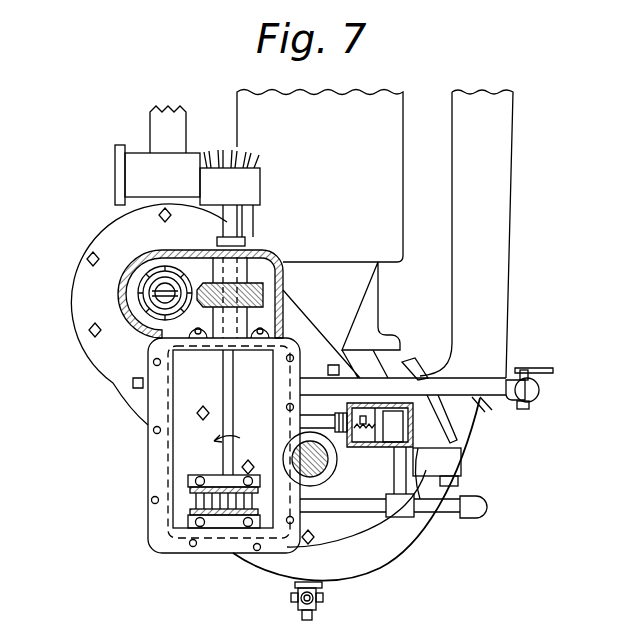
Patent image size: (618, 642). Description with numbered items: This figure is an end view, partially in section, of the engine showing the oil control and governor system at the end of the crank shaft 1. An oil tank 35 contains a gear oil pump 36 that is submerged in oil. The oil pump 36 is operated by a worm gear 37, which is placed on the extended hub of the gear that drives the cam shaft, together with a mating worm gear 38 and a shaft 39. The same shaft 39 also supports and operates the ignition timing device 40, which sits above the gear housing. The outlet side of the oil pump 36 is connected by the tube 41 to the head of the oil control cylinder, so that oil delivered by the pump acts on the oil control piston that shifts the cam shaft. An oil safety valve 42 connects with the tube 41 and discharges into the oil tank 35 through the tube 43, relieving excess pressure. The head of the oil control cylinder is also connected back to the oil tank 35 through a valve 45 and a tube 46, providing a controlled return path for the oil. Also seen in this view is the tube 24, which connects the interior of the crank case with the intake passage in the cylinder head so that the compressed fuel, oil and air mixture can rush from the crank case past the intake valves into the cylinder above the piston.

The crank shaft 1 is at (322, 469).
The tube 24 is at (513, 240).
The oil tank 35 is at (156, 444).
The gear oil pump 36 is at (217, 520).
The worm gear 37 is at (122, 290).
The worm gear 38 is at (283, 291).
The shaft 39 is at (222, 377).
The ignition timing device 40 is at (262, 181).
The tube 41 is at (385, 518).
The oil safety valve 42 is at (376, 447).
The tube 43 is at (311, 420).
The valve 45 is at (541, 391).
The tube 46 is at (480, 408).